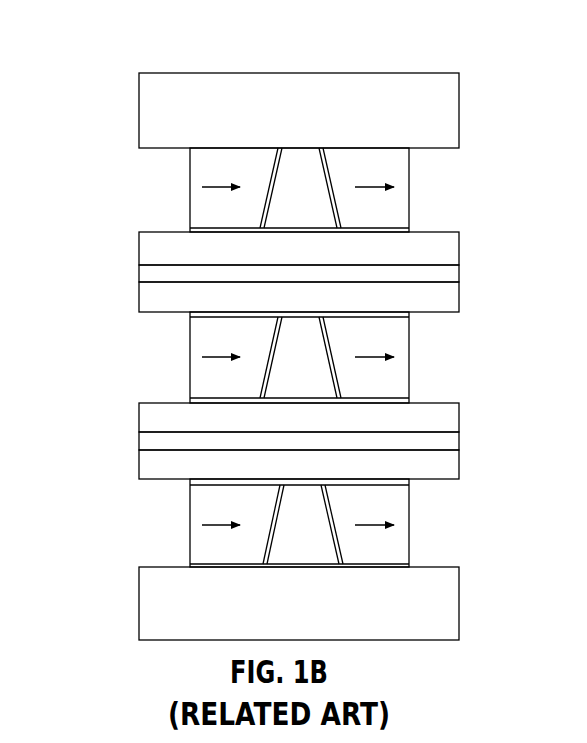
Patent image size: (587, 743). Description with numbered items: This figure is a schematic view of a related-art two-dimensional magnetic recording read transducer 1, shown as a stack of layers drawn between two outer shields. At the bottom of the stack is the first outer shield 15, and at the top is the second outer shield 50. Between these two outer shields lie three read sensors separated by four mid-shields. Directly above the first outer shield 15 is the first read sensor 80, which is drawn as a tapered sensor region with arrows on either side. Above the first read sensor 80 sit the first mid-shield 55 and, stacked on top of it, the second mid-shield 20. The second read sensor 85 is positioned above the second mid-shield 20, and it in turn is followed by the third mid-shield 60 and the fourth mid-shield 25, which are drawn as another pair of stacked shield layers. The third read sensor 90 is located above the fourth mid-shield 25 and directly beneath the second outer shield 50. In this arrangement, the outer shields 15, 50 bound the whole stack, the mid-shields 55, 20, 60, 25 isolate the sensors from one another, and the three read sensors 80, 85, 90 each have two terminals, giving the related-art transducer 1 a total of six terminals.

The two-dimensional magnetic recording read transducer 1 is at (37, 56).
The second outer shield 50 is at (459, 110).
The third read sensor 90 is at (287, 210).
The fourth mid-shield 25 is at (459, 248).
The third mid-shield 60 is at (459, 307).
The second read sensor 85 is at (305, 385).
The second mid-shield 20 is at (459, 412).
The first mid-shield 55 is at (459, 465).
The first read sensor 80 is at (295, 538).
The first outer shield 15 is at (459, 610).